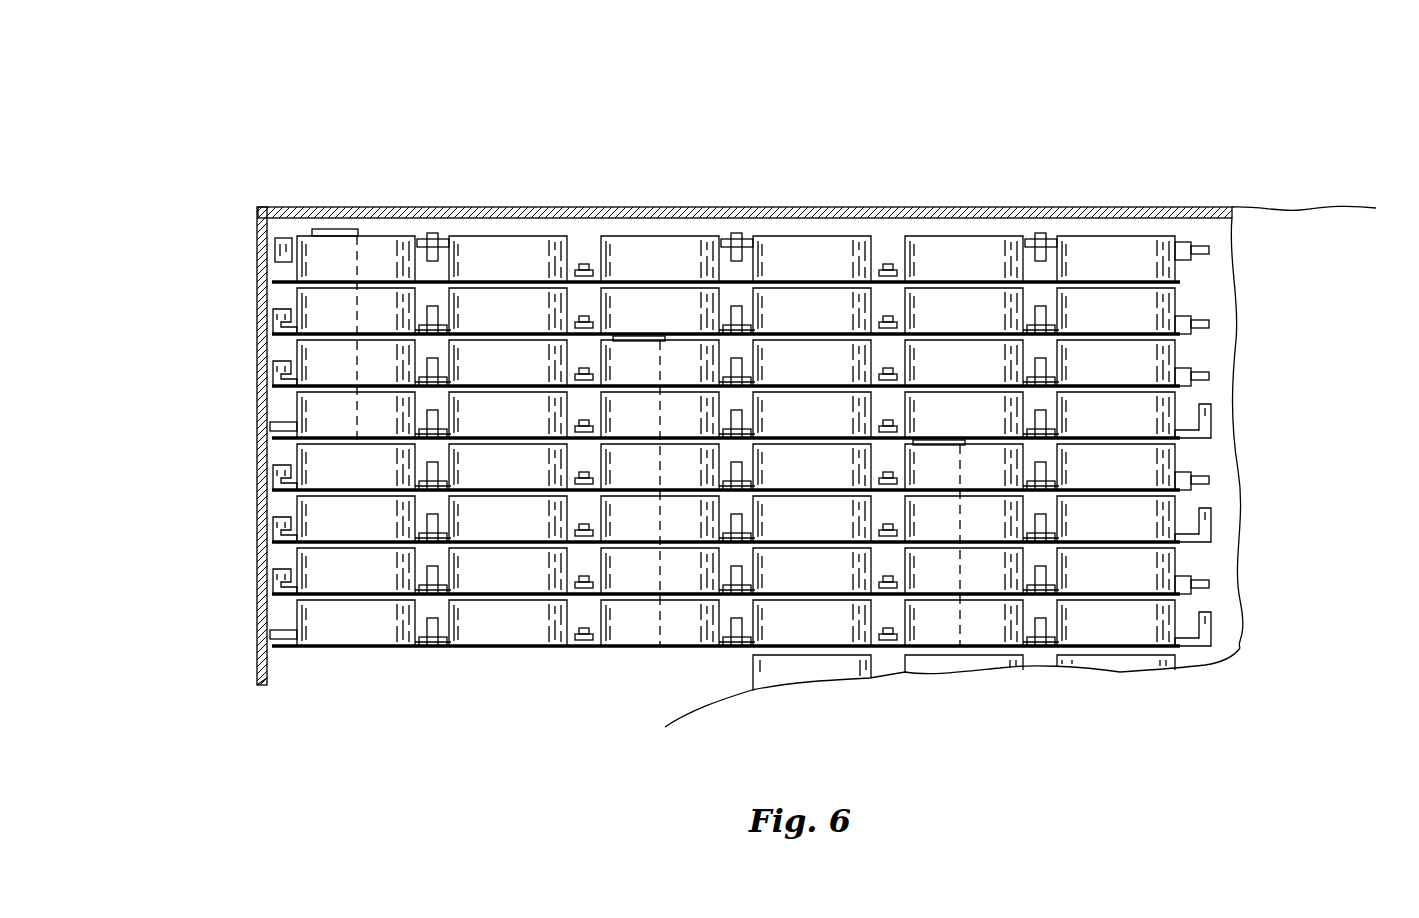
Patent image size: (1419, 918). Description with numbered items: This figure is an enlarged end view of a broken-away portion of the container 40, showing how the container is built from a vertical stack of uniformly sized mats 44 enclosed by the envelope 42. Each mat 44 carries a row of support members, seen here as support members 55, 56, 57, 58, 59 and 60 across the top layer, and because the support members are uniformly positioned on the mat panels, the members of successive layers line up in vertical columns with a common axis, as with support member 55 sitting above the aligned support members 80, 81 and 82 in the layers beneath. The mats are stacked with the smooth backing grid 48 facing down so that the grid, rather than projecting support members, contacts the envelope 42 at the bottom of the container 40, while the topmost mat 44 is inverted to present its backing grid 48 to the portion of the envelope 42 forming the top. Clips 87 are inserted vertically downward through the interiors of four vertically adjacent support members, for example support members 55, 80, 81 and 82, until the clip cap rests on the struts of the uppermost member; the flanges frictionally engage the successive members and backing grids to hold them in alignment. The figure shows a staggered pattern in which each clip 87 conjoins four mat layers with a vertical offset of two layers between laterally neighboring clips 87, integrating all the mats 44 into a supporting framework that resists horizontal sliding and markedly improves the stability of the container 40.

The container 40 is at (816, 381).
The envelope 42 is at (946, 208).
The mat 44 is at (1145, 356).
The backing grid 48 is at (1068, 240).
The support member 55 is at (376, 246).
The support member 56 is at (507, 248).
The support member 57 is at (652, 252).
The support member 58 is at (810, 256).
The support member 59 is at (930, 252).
The support member 60 is at (1100, 250).
The support member 80 is at (308, 298).
The support member 81 is at (308, 356).
The support member 82 is at (300, 410).
The clip 87 is at (325, 230).